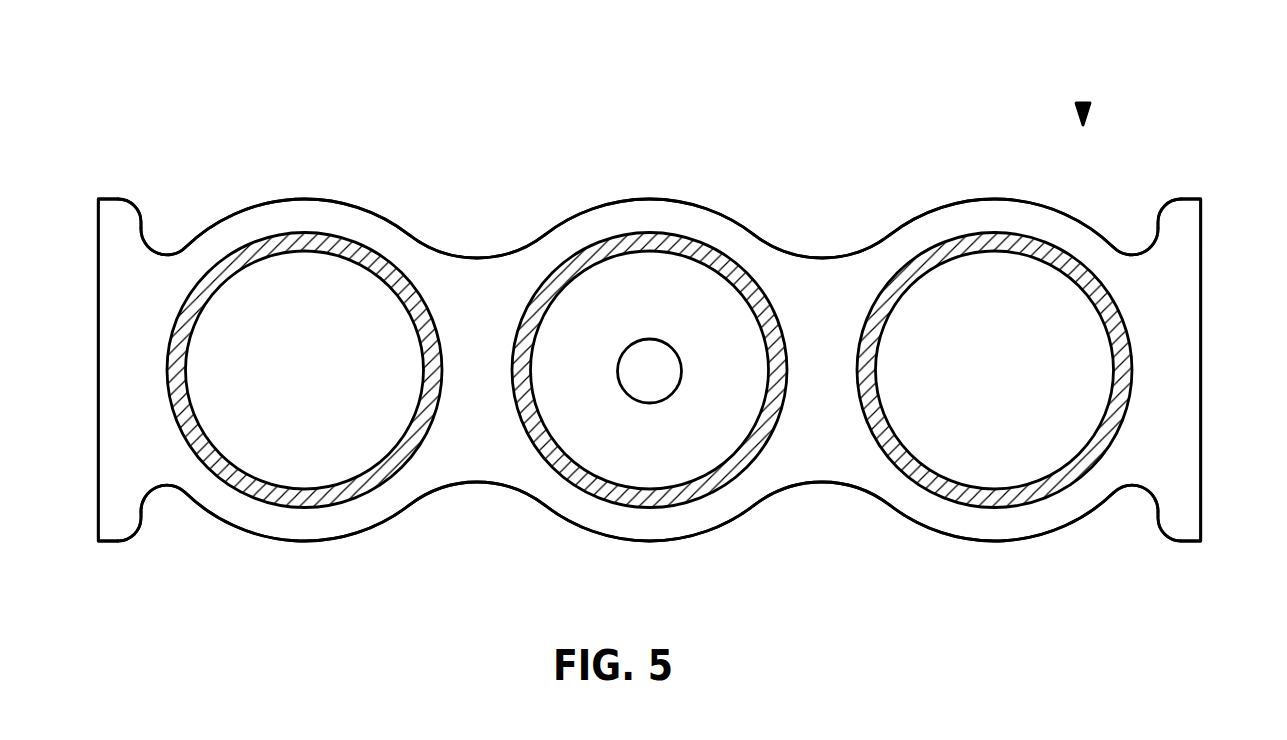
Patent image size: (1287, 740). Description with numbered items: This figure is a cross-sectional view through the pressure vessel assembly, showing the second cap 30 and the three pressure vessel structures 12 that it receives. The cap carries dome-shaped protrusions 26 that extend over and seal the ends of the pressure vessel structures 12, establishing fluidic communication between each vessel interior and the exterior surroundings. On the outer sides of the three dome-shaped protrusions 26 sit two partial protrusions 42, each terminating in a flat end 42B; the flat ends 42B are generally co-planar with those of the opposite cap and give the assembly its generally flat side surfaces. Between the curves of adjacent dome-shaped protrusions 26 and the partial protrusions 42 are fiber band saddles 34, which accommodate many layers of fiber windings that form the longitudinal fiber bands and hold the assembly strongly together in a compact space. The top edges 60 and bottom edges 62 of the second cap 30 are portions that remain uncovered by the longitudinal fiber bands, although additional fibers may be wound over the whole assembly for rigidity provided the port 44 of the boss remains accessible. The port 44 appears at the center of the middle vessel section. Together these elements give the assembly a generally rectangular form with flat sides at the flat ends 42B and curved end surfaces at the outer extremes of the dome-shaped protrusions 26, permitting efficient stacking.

The second cap 30 is at (1083, 105).
The top edge 60 is at (117, 198).
The partial protrusion 42 is at (141, 224).
The flat end 42B is at (98, 323).
The fiber band saddle 34 is at (170, 490).
The pressure vessel structure 12 is at (243, 243).
The bottom edge 62 is at (110, 541).
The dome-shaped protrusion 26 is at (280, 541).
The port 44 is at (653, 368).